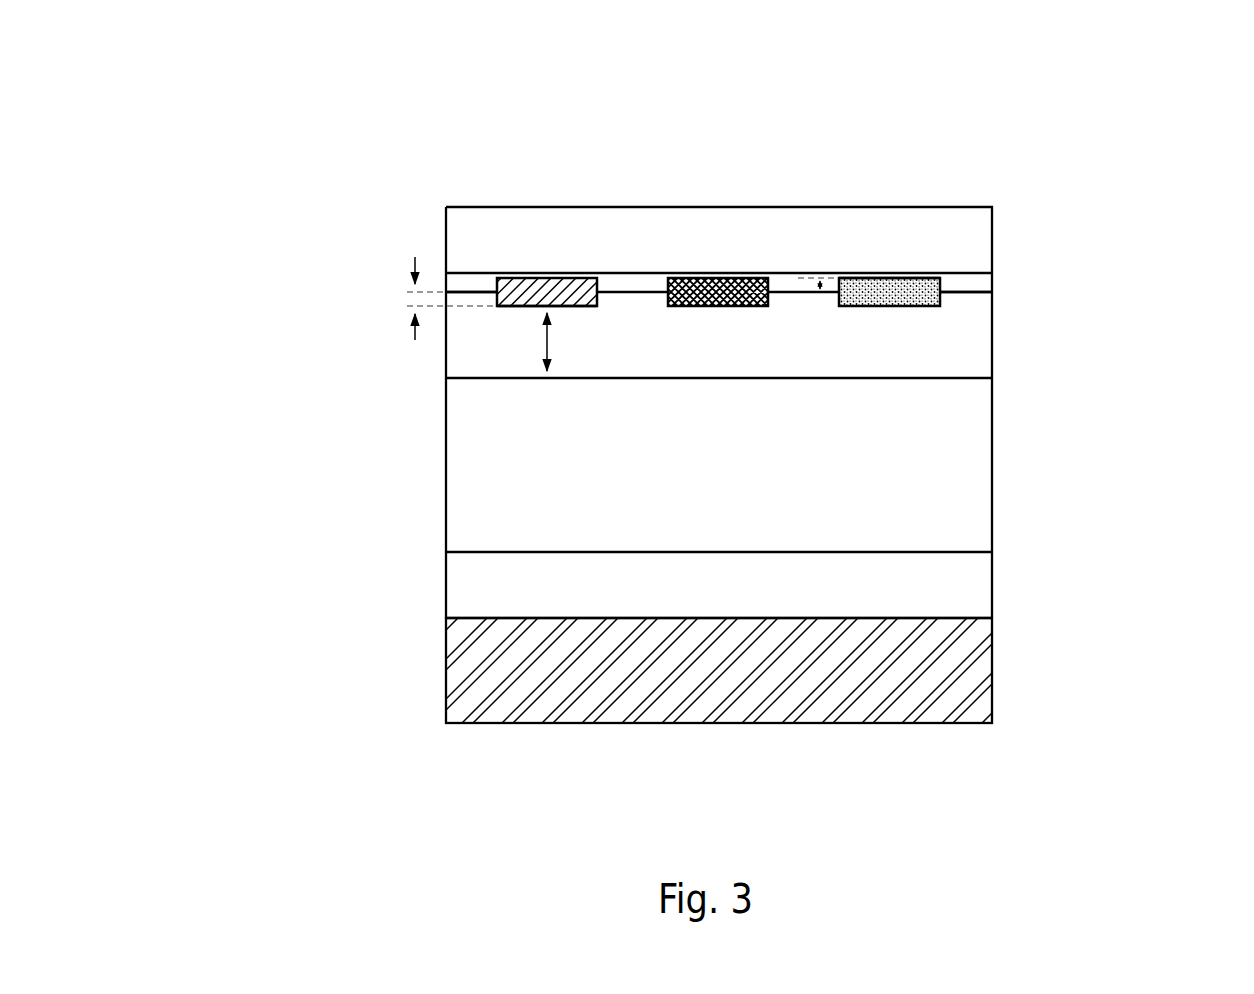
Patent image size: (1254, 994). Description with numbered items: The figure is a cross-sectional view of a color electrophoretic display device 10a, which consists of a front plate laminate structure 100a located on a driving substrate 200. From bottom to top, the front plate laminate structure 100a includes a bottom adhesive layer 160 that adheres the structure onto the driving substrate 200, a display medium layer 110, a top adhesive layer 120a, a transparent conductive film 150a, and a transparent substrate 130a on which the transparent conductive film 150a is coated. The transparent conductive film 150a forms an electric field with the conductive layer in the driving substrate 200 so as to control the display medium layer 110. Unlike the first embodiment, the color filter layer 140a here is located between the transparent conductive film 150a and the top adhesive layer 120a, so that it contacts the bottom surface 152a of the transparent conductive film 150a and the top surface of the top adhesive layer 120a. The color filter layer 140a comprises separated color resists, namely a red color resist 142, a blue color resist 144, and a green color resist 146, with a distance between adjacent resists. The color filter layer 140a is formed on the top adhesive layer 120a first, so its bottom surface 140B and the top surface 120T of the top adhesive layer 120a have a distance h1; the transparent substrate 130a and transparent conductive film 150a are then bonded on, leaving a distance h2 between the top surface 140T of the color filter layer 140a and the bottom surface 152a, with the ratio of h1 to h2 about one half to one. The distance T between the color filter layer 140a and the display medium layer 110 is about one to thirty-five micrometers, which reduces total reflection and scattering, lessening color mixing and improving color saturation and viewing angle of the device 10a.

The color electrophoretic display device 10a is at (276, 58).
The front plate laminate structure 100a is at (1120, 145).
The display medium layer 110 is at (985, 463).
The top adhesive layer 120a is at (985, 322).
The top surface of the top adhesive layer 120T is at (472, 292).
The transparent substrate 130a is at (985, 237).
The color filter layer 140a is at (830, 75).
The red color resist 142 is at (547, 287).
The blue color resist 144 is at (718, 288).
The green color resist 146 is at (893, 288).
The top surface of the color filter layer 140T is at (920, 288).
The bottom surface of the color filter layer 140B is at (513, 307).
The transparent conductive film 150a is at (985, 282).
The bottom surface of the transparent conductive film 152a is at (958, 284).
The bottom adhesive layer 160 is at (985, 583).
The driving substrate 200 is at (985, 670).
The distance h1 is at (433, 298).
The distance h2 is at (817, 285).
The distance T is at (562, 342).